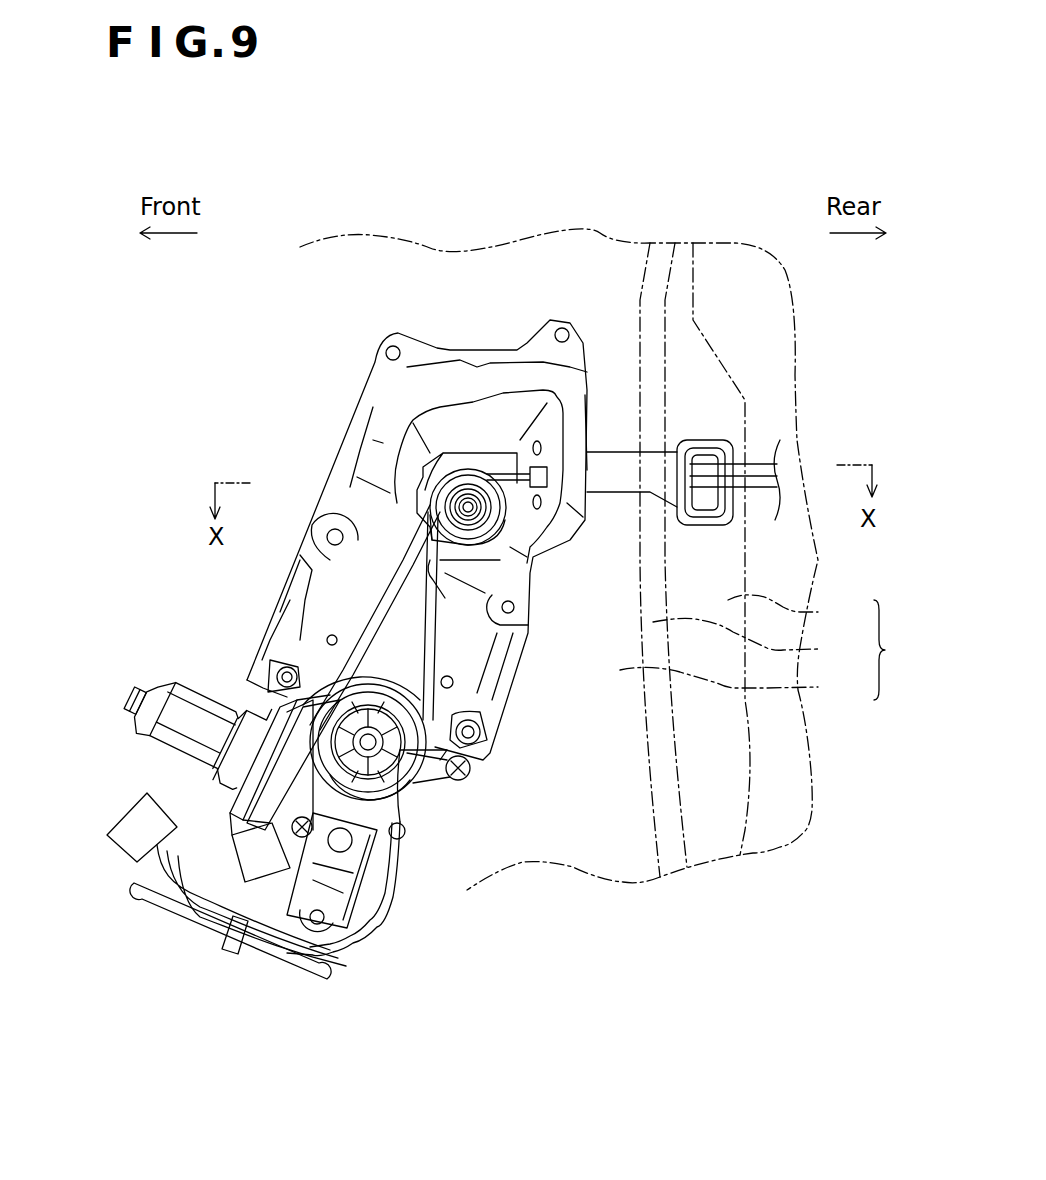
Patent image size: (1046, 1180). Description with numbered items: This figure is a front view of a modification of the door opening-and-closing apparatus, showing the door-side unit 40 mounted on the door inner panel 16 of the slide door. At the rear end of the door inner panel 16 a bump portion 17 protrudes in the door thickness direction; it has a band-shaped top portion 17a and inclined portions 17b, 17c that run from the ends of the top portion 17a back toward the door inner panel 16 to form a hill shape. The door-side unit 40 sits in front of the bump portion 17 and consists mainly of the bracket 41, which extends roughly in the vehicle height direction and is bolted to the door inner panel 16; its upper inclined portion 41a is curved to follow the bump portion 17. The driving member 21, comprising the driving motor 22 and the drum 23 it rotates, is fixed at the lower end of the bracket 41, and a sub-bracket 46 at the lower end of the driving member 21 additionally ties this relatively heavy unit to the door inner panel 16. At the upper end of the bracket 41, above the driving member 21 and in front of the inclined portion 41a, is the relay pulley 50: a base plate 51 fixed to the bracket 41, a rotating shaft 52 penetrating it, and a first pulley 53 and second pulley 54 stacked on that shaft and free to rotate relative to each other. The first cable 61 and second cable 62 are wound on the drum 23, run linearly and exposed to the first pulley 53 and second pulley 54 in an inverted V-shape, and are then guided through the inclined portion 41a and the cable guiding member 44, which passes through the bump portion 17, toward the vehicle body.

The door inner panel 16 is at (625, 309).
The bump portion 17 is at (897, 650).
The top portion 17a is at (762, 642).
The inclined portion 17b is at (746, 685).
The inclined portion 17c is at (799, 612).
The driving member 21 is at (200, 690).
The driving motor 22 is at (182, 752).
The drum 23 is at (407, 790).
The door-side unit 40 is at (317, 333).
The bracket 41 is at (375, 403).
The inclined portion 41a is at (572, 423).
The cable guiding member 44 is at (612, 492).
The sub-bracket 46 is at (345, 883).
The relay pulley 50 is at (512, 561).
The base plate 51 is at (473, 467).
The rotating shaft 52 is at (452, 480).
The first pulley 53 is at (512, 467).
The second pulley 54 is at (420, 512).
The first cable 61 is at (375, 625).
The second cable 62 is at (437, 620).